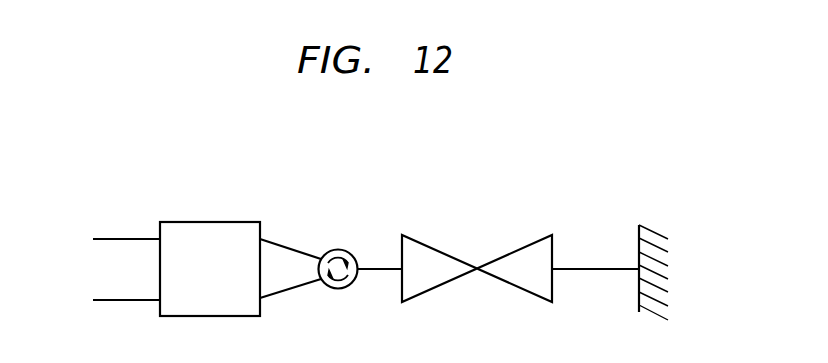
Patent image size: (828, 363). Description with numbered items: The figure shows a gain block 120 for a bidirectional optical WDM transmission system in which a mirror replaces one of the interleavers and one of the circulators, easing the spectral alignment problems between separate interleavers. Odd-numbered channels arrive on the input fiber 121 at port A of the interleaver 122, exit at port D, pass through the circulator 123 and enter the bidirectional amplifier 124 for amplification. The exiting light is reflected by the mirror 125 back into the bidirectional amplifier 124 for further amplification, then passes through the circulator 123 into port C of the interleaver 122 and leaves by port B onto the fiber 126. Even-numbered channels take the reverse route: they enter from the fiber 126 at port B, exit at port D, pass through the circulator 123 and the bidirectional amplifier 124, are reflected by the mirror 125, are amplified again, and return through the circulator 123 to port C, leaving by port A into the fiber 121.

The gain block 120 is at (388, 115).
The input fiber 121 is at (132, 240).
The interleaver 122 is at (213, 222).
The circulator 123 is at (342, 250).
The bidirectional amplifier 124 is at (530, 240).
The mirror 125 is at (653, 232).
The fiber 126 is at (125, 300).